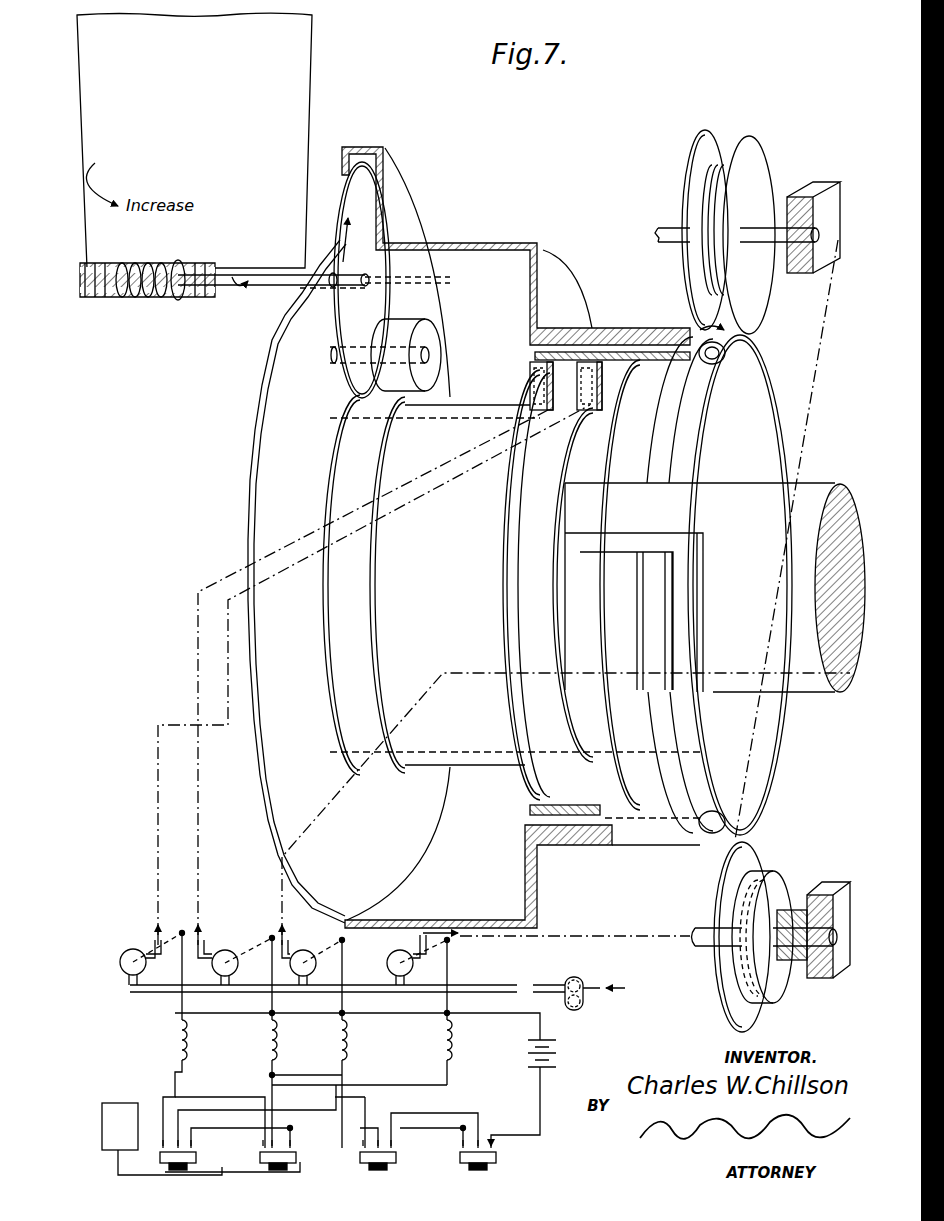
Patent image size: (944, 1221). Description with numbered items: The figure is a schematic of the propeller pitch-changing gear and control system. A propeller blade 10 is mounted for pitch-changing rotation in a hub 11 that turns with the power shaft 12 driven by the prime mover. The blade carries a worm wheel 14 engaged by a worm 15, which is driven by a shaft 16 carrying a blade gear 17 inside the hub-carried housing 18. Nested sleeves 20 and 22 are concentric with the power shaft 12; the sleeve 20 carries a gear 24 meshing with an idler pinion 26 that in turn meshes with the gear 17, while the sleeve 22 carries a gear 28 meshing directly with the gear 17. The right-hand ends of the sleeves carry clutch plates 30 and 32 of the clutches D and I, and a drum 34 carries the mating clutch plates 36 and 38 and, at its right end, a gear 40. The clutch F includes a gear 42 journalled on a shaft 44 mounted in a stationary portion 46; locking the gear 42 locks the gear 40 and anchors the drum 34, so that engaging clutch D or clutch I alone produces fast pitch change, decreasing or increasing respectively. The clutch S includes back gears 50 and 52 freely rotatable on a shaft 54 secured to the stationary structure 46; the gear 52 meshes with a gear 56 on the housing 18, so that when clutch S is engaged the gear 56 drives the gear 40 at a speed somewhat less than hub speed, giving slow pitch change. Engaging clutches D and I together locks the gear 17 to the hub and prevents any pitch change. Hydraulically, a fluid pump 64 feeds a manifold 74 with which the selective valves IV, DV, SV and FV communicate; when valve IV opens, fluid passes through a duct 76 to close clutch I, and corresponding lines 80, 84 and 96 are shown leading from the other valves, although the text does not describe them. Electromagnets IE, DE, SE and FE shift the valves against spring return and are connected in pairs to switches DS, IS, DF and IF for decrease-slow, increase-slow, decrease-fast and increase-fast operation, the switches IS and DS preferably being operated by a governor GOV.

The propeller blade 10 is at (303, 94).
The hub 11 is at (270, 348).
The power shaft 12 is at (738, 490).
The worm wheel 14 is at (206, 266).
The worm 15 is at (179, 266).
The shaft 16 is at (258, 278).
The blade gear 17 is at (336, 310).
The hub-carried housing 18 is at (462, 243).
The sleeve 20 is at (482, 407).
The sleeve 22 is at (372, 424).
The gear 24 is at (430, 398).
The idler pinion 26 is at (433, 340).
The gear 28 is at (326, 455).
The clutch plate 30 is at (500, 488).
The clutch plate 32 is at (515, 528).
The drum 34 is at (634, 352).
The clutch plate 36 is at (570, 412).
The clutch plate 38 is at (604, 398).
The gear 40 is at (745, 362).
The gear 42 is at (716, 910).
The shaft 44 is at (700, 946).
The stationary portion 46 is at (815, 190).
The gear 50 is at (766, 300).
The gear 52 is at (684, 186).
The shaft 54 is at (752, 228).
The gear 56 is at (706, 366).
The fluid pump 64 is at (584, 980).
The manifold 74 is at (355, 990).
The duct 76 is at (150, 945).
The control line 80 is at (205, 942).
The control line 84 is at (287, 942).
The control line 96 is at (447, 952).
The clutch D is at (530, 380).
The clutch I is at (622, 432).
The clutch S is at (720, 190).
The clutch F is at (768, 900).
The valve IV is at (152, 957).
The valve DV is at (236, 957).
The valve SV is at (313, 957).
The valve FV is at (418, 957).
The electromagnet IE is at (163, 1040).
The electromagnet DE is at (254, 1043).
The electromagnet SE is at (327, 1044).
The electromagnet FE is at (432, 1012).
The switch DS is at (193, 1161).
The switch IS is at (294, 1162).
The switch DF is at (393, 1161).
The switch IF is at (491, 1161).
The governor GOV is at (201, 1139).